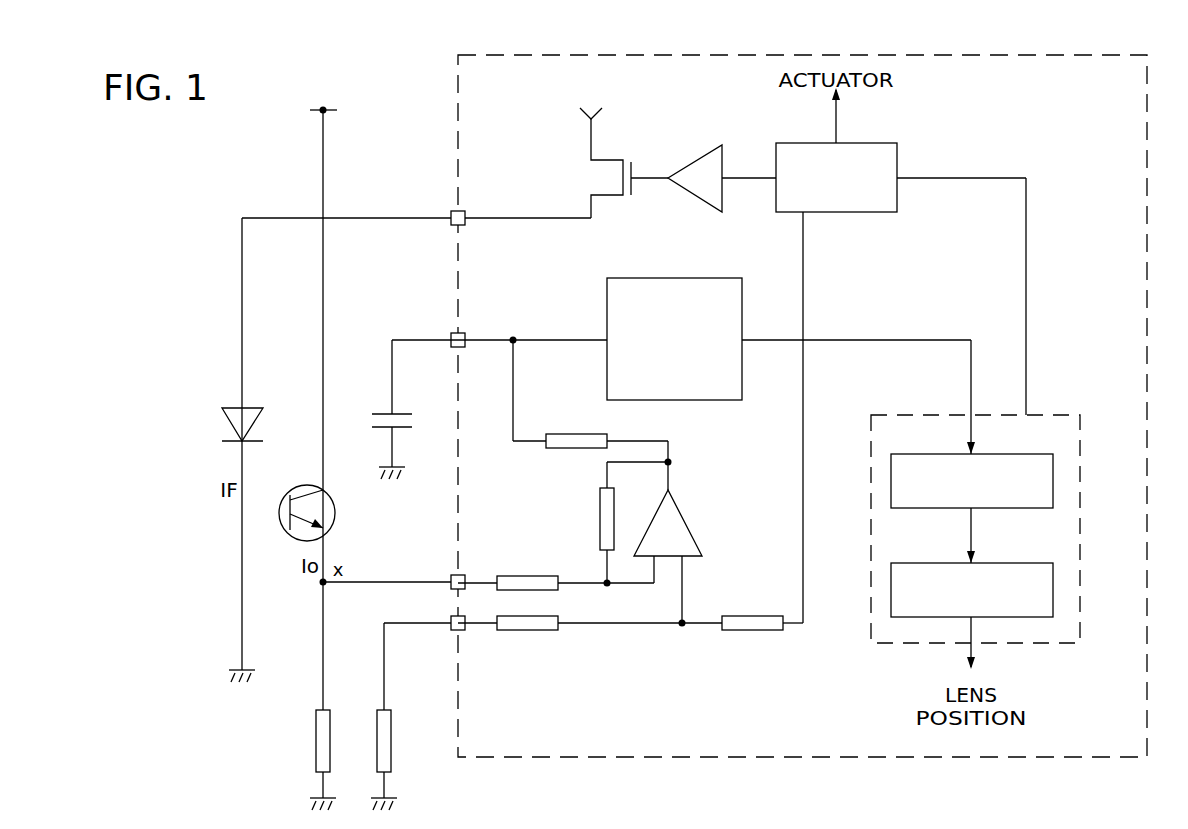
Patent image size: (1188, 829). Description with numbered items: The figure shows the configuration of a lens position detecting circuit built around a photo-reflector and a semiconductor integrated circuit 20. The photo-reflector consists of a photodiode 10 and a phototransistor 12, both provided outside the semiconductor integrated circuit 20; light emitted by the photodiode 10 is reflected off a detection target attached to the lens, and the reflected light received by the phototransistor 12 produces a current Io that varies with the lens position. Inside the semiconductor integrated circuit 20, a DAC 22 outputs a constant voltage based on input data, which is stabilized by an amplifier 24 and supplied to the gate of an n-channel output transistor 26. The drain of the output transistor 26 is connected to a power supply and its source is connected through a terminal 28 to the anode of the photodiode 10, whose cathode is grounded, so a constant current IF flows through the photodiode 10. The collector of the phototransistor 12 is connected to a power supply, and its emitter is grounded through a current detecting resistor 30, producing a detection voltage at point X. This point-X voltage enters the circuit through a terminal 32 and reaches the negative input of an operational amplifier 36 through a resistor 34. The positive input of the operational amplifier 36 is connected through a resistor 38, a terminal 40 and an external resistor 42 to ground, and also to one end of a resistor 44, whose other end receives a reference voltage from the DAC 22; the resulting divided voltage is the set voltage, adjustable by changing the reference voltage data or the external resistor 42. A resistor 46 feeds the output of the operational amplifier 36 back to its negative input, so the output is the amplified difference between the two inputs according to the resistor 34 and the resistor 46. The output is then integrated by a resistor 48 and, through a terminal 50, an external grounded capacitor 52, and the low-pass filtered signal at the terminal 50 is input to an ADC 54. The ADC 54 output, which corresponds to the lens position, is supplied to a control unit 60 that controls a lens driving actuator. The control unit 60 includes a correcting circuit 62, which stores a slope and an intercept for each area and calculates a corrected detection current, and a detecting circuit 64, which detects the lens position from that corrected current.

The photodiode 10 is at (230, 424).
The phototransistor 12 is at (302, 501).
The semiconductor integrated circuit 20 is at (802, 395).
The DAC 22 is at (837, 165).
The amplifier 24 is at (722, 172).
The output transistor 26 is at (613, 163).
The terminal 28 is at (442, 206).
The current detecting resistor 30 is at (312, 760).
The terminal 32 is at (444, 572).
The resistor 34 is at (527, 570).
The operational amplifier 36 is at (674, 556).
The resistor 38 is at (527, 639).
The terminal 40 is at (446, 637).
The external resistor 42 is at (402, 716).
The resistor 44 is at (752, 639).
The resistor 46 is at (592, 519).
The resistor 48 is at (576, 428).
The terminal 50 is at (442, 329).
The capacitor 52 is at (397, 409).
The ADC 54 is at (676, 326).
The control unit 60 is at (978, 517).
The correcting circuit 62 is at (972, 470).
The detecting circuit 64 is at (972, 580).